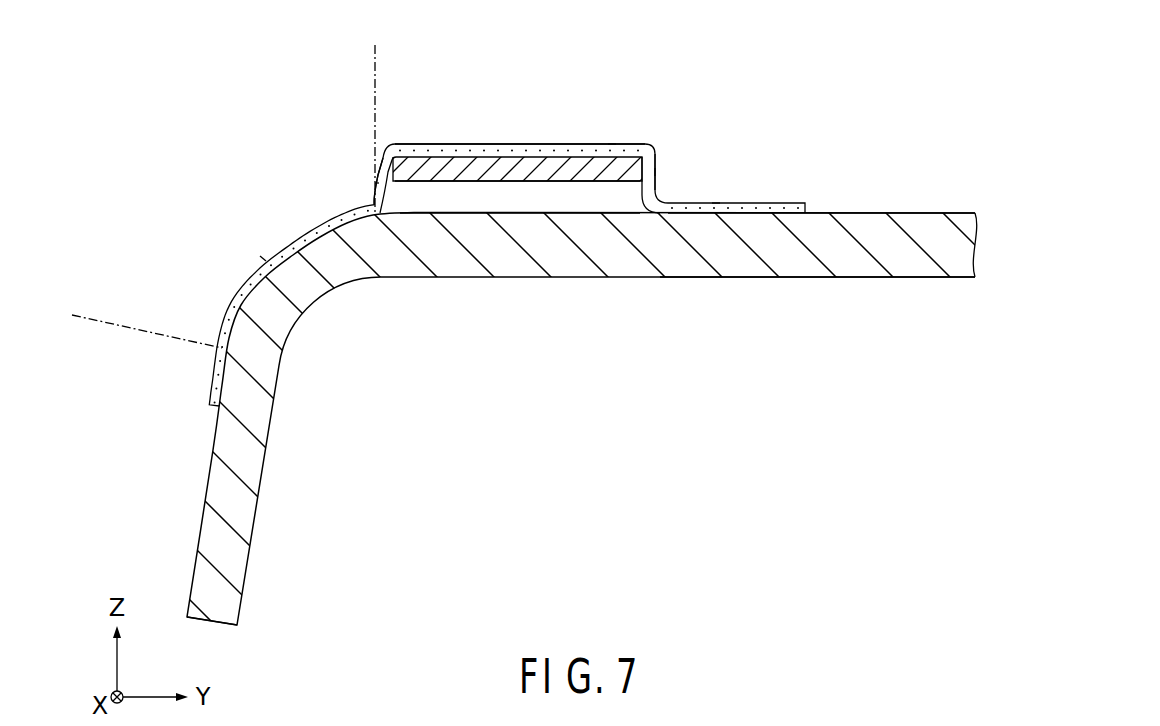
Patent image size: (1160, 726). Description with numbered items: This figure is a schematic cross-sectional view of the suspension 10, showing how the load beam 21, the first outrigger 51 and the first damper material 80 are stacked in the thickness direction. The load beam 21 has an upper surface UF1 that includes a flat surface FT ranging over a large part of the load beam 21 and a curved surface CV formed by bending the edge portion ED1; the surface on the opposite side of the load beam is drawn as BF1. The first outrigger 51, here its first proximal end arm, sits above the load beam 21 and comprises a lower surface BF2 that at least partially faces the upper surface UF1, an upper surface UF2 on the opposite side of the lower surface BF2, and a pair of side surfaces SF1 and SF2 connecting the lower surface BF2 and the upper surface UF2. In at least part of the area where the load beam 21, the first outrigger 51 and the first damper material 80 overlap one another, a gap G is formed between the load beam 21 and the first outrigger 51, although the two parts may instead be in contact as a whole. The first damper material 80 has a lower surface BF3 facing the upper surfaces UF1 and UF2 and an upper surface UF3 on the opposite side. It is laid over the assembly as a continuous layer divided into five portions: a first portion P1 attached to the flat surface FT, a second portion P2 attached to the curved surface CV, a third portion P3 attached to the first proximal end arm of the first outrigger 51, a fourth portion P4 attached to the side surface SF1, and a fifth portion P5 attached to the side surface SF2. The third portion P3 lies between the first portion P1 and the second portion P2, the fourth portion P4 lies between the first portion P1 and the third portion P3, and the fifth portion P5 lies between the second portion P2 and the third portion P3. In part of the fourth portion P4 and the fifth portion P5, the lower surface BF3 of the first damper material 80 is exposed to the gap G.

The suspension 10 is at (709, 350).
The load beam 21 is at (943, 187).
The first damper material 80 is at (306, 212).
The first outrigger 51 is at (520, 190).
The gap G is at (583, 200).
The lower surface BF2 is at (457, 183).
The upper surface UF2 is at (548, 154).
The third portion P3 is at (612, 145).
The side surface SF1 is at (655, 168).
The fourth portion P4 is at (657, 172).
The first portion P1 is at (716, 204).
The side surface SF2 is at (381, 165).
The fifth portion P5 is at (374, 187).
The second portion P2 is at (263, 258).
The upper surface UF3 is at (768, 213).
The upper surface UF1 is at (872, 213).
The lower surface BF3 is at (770, 277).
The back surface 1 BF1 is at (878, 277).
The edge portion ED1 is at (182, 435).
The curved surface CV is at (373, 66).
The flat surface FT is at (975, 72).